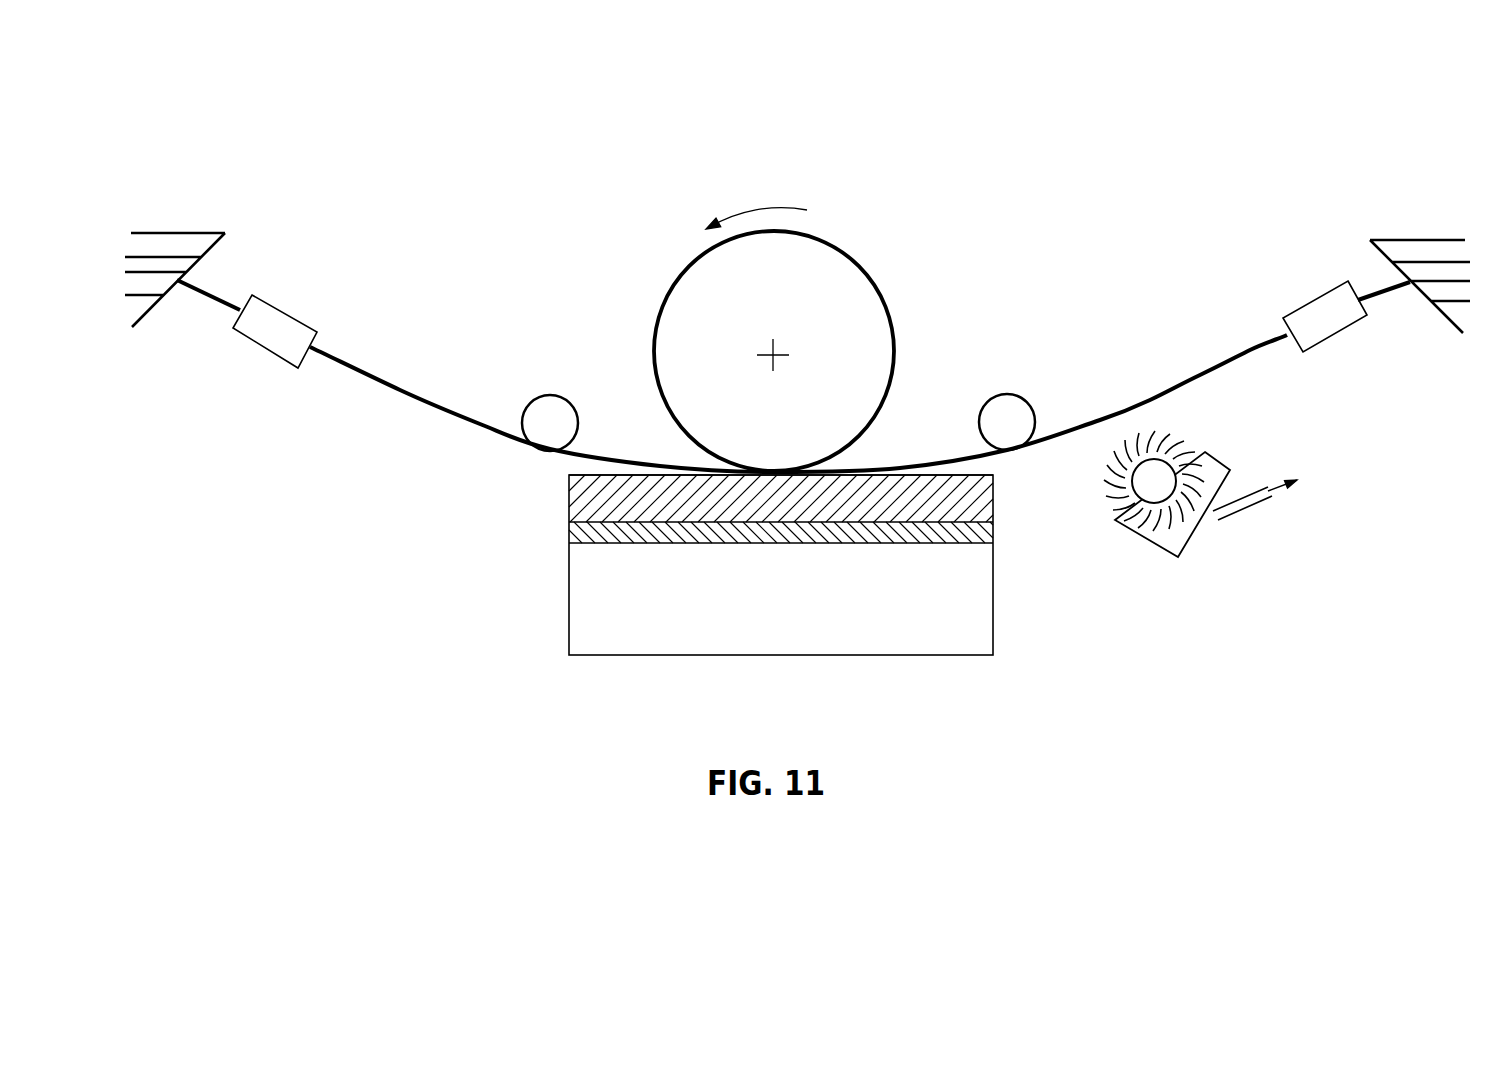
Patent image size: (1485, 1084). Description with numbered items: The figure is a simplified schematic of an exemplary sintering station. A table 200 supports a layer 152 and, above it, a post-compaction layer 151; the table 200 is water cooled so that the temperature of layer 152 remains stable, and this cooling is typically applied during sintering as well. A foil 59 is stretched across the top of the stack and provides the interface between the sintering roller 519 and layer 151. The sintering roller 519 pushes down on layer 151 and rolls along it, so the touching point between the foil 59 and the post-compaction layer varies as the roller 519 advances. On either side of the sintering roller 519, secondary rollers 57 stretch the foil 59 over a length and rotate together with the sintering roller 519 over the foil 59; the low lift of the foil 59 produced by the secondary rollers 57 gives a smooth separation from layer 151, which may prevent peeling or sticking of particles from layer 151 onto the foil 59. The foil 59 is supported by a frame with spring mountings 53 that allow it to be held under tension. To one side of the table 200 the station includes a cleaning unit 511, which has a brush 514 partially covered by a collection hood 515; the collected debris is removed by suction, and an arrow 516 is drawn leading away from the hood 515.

The spring mountings 53 is at (267, 348).
The foil 59 is at (417, 403).
The secondary rollers 57 is at (520, 408).
The sintering roller 519 is at (657, 385).
The layer 151 is at (613, 510).
The layer 152 is at (750, 533).
The table 200 is at (973, 602).
The cleaning unit 511 is at (1271, 521).
The brush 514 is at (1123, 505).
The collection hood 515 is at (1195, 535).
The emitted light 516 is at (1255, 505).